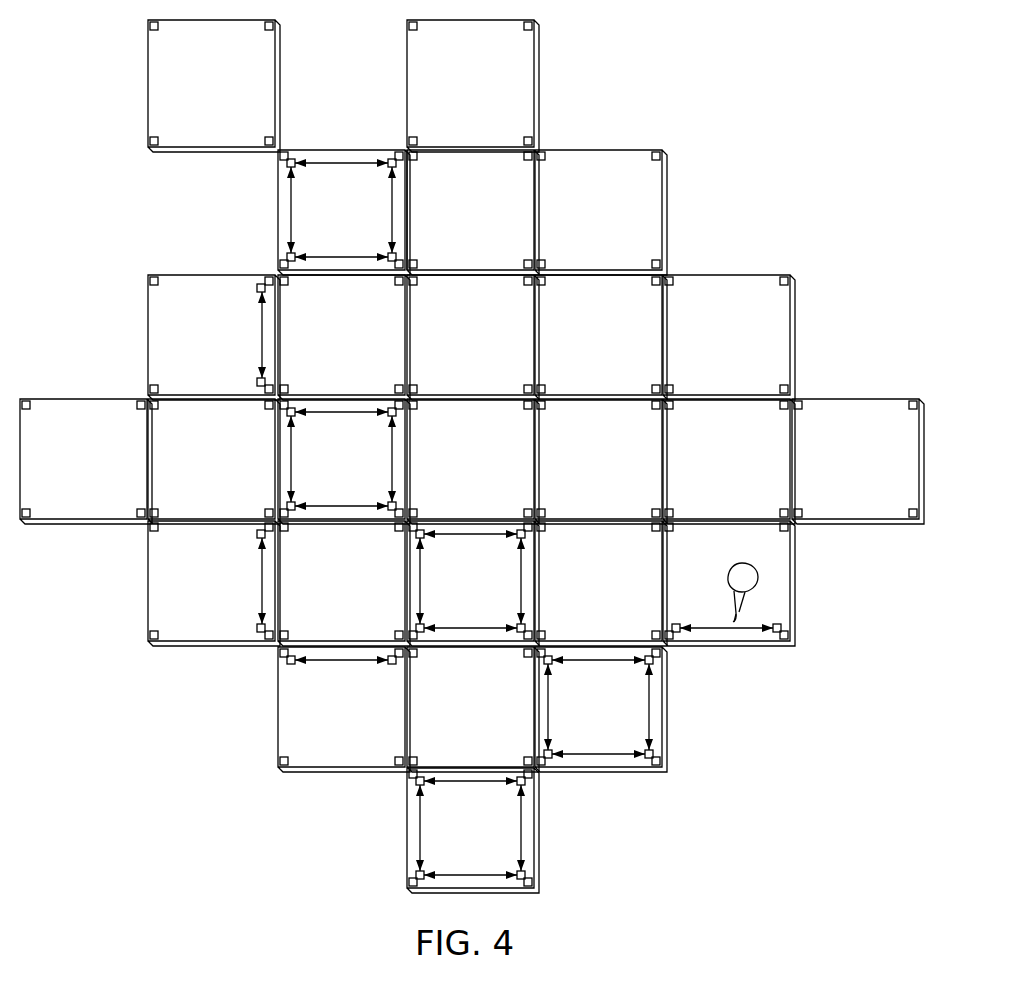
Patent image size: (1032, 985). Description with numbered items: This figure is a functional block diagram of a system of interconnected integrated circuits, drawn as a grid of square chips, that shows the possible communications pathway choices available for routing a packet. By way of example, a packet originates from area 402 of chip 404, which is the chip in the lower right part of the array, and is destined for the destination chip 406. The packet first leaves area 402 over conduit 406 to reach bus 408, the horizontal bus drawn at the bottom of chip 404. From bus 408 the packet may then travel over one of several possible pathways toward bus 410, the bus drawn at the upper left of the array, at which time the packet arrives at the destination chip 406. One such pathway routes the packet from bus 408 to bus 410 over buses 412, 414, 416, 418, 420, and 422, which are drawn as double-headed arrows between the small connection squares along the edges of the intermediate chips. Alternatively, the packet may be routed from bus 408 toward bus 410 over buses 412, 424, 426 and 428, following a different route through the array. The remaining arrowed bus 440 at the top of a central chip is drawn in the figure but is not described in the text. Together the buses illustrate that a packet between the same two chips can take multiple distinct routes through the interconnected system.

The area 402 is at (760, 572).
The chip 404 is at (771, 647).
The conduit 406 is at (412, 176).
The bus 408 is at (692, 633).
The bus 410 is at (292, 200).
The bus 412 is at (605, 652).
The bus 414 is at (448, 626).
The bus 416 is at (373, 664).
The bus 418 is at (264, 565).
The bus 420 is at (296, 448).
The bus 422 is at (263, 317).
The bus 424 is at (522, 562).
The bus 426 is at (440, 540).
The bus 428 is at (393, 455).
The horizontal spacing arrow 440 is at (339, 408).